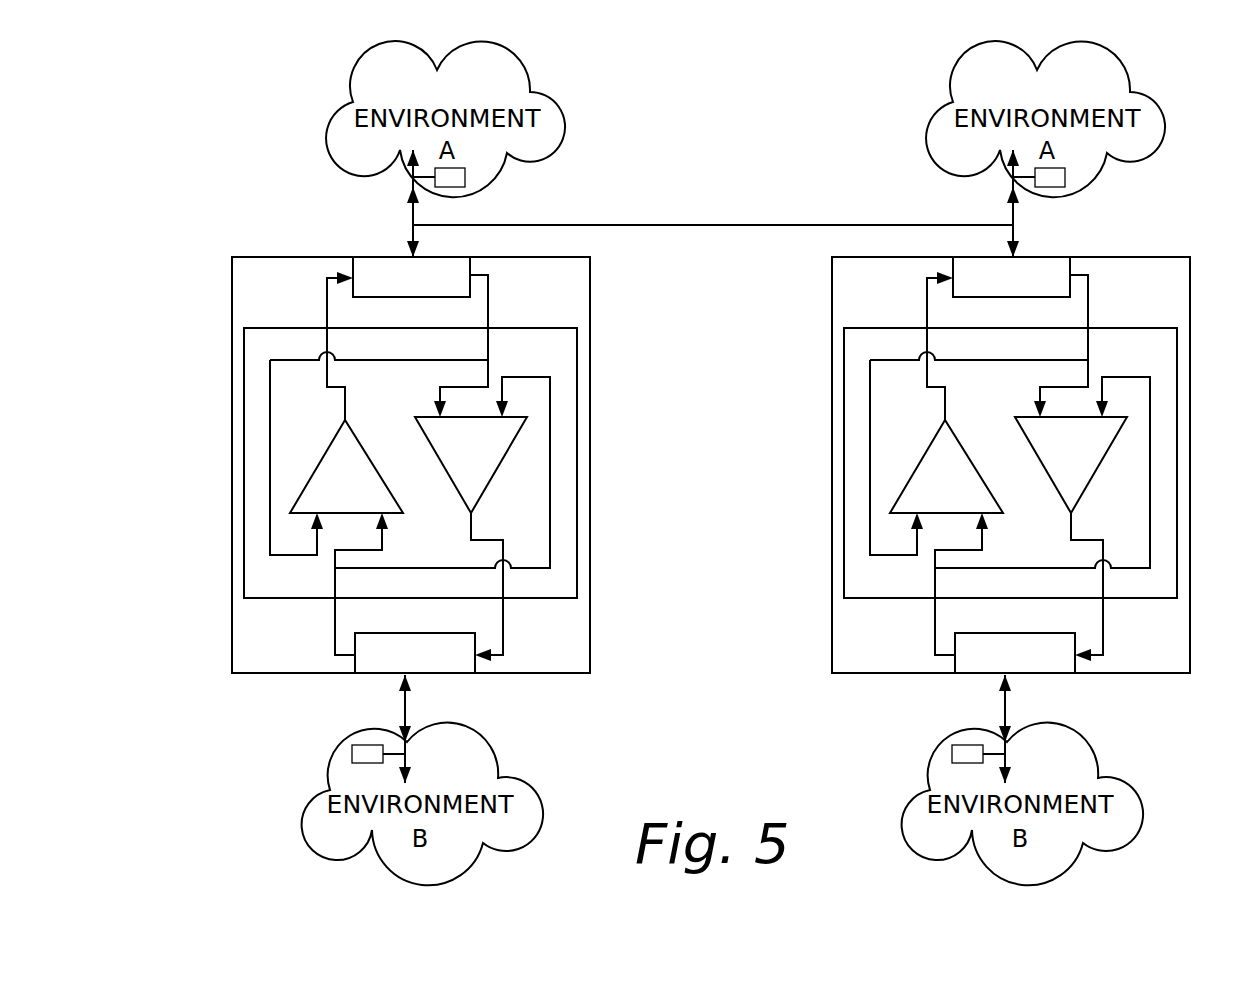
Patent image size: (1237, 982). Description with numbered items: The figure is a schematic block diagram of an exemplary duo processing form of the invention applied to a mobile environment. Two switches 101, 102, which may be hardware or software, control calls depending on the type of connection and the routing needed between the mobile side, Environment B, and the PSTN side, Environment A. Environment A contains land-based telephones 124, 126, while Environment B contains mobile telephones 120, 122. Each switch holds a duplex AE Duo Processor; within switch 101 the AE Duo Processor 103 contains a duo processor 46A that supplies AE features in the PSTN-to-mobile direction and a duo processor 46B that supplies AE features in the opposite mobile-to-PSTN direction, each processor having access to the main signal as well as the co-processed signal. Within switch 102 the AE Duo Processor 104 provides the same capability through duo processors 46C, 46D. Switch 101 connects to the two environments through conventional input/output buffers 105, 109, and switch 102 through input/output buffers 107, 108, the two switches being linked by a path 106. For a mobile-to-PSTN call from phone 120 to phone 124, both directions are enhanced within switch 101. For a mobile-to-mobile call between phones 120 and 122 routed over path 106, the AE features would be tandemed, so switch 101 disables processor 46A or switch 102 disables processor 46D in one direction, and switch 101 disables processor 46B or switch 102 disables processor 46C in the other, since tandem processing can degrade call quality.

The switch 101 is at (262, 257).
The switch 102 is at (1015, 421).
The AE Duo Processor 103 is at (537, 328).
The AE Duo Processor 104 is at (1010, 462).
The input/output buffer 105 is at (365, 257).
The path 106 is at (697, 225).
The input/output buffer 107 is at (1046, 237).
The input/output buffer 108 is at (967, 680).
The input/output buffer 109 is at (355, 676).
The telephone 120 is at (352, 754).
The telephone 122 is at (891, 766).
The telephone 124 is at (465, 177).
The telephone 126 is at (1128, 165).
The duo processor 46A is at (322, 460).
The duo processor 46B is at (458, 490).
The duo processor 46C is at (939, 453).
The duo processor 46D is at (1059, 487).